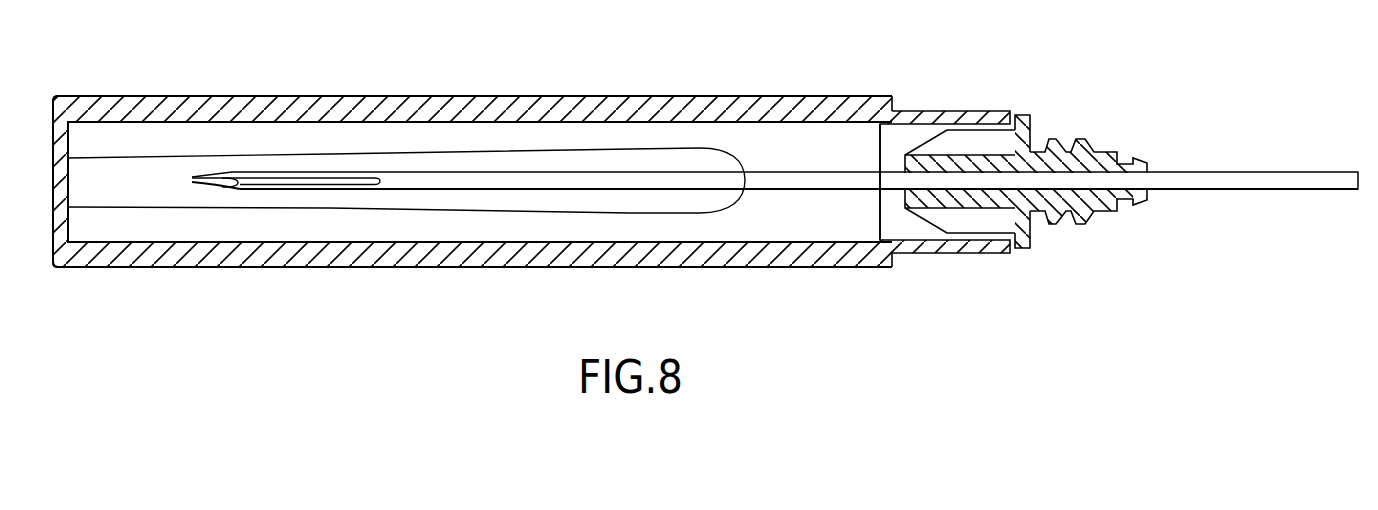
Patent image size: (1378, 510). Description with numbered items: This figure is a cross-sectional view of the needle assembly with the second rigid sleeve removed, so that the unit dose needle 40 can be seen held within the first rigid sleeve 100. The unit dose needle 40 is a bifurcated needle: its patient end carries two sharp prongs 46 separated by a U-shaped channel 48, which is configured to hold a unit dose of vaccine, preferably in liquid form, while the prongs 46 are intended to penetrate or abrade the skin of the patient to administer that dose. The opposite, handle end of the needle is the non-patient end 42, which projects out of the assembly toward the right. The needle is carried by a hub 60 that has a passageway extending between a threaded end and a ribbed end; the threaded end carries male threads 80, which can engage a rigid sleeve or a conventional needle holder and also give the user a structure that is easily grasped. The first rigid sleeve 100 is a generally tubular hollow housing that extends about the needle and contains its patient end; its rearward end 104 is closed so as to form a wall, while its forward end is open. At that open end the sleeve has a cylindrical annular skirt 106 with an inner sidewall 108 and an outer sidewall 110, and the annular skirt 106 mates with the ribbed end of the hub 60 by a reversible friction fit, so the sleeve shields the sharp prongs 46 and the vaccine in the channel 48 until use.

The unit dose needle 40 is at (770, 182).
The non-patient end 42 is at (1249, 191).
The sharp prongs 46 is at (193, 177).
The U-shaped channel 48 is at (226, 182).
The hub 60 is at (1074, 207).
The male threads 80 is at (1078, 139).
The first rigid sleeve 100 is at (527, 254).
The rearward end 104 is at (46, 104).
The cylindrical annular skirt 106 is at (907, 115).
The inner sidewall 108 is at (978, 130).
The outer sidewall 110 is at (941, 112).